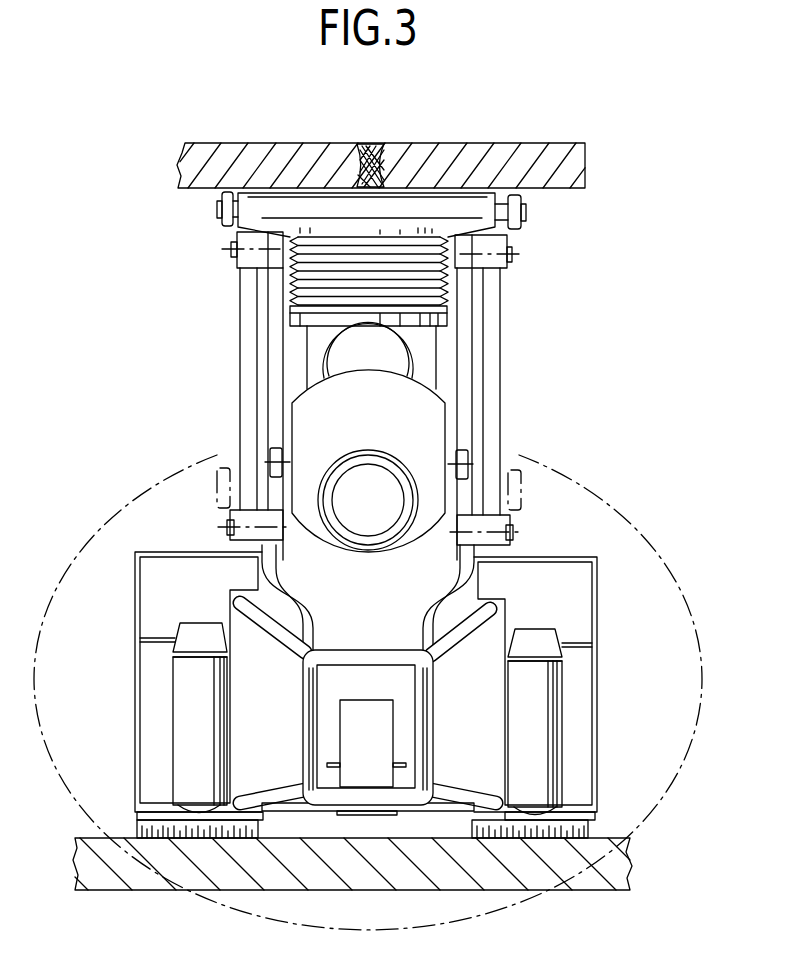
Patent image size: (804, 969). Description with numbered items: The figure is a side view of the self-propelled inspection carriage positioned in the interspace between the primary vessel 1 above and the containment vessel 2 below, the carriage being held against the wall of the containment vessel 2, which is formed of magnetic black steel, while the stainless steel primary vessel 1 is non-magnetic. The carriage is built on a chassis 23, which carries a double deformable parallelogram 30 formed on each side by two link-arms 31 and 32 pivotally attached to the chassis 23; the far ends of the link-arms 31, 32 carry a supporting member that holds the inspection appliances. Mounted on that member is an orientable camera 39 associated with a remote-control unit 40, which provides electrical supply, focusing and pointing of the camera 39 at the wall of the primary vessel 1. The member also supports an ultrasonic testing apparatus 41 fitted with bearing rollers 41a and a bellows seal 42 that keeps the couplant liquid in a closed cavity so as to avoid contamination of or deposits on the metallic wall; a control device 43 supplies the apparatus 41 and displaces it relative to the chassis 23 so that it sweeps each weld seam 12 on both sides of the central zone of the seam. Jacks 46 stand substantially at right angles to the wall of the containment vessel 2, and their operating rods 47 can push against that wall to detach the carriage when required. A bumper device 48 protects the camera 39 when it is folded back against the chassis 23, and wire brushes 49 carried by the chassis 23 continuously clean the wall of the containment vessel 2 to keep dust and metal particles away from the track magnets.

The primary vessel 1 is at (244, 143).
The weld seams 12 is at (372, 152).
The double deformable parallelogram 30 is at (535, 412).
The link-arm 32 is at (500, 327).
The ultrasonic testing apparatus 41 is at (246, 222).
The bearing rollers 41a is at (516, 228).
The bellows seal 42 is at (455, 299).
The control device 43 is at (420, 373).
The orientable camera 39 is at (382, 423).
The remote-control unit 40 is at (382, 513).
The link-arm 31 is at (448, 595).
The chassis 23 is at (598, 622).
The jacks 46 is at (185, 695).
The bumper device 48 is at (413, 680).
The operating rods 47 is at (196, 810).
The wire brushes 49 is at (565, 834).
The containment vessel 2 is at (318, 890).